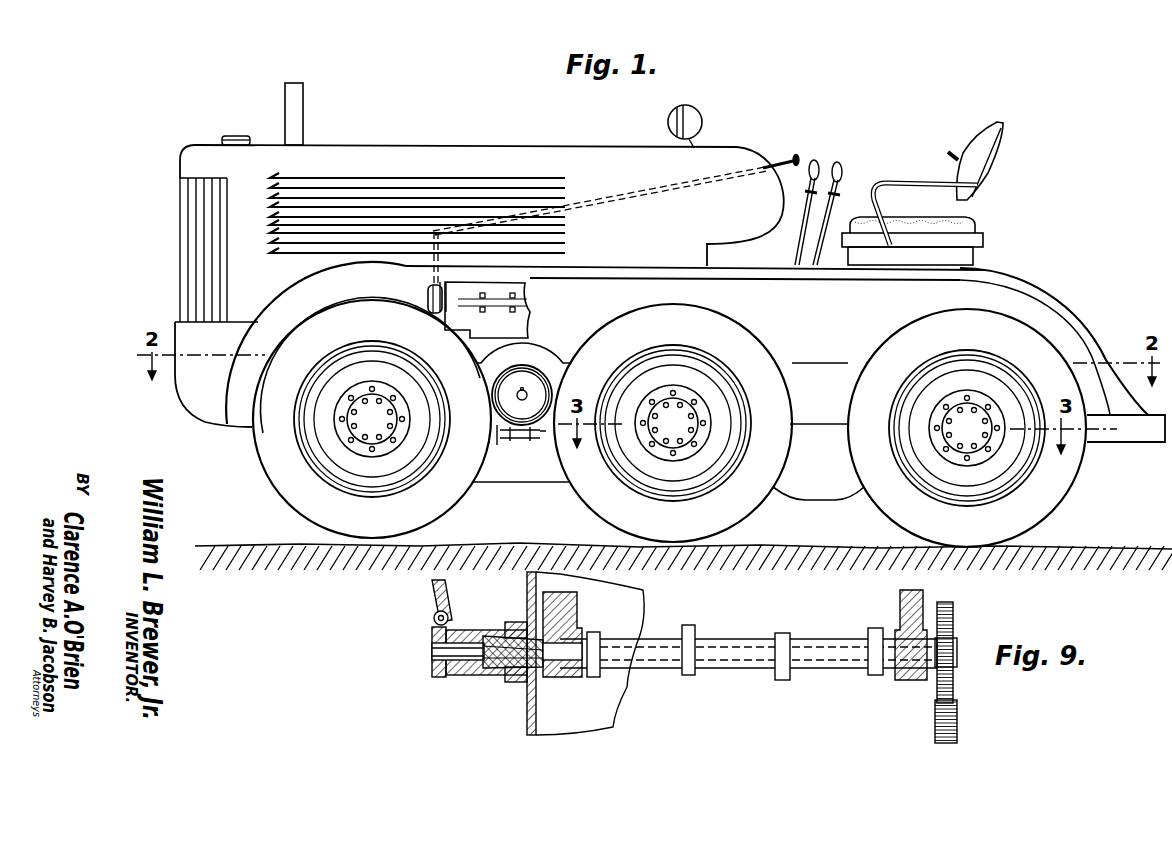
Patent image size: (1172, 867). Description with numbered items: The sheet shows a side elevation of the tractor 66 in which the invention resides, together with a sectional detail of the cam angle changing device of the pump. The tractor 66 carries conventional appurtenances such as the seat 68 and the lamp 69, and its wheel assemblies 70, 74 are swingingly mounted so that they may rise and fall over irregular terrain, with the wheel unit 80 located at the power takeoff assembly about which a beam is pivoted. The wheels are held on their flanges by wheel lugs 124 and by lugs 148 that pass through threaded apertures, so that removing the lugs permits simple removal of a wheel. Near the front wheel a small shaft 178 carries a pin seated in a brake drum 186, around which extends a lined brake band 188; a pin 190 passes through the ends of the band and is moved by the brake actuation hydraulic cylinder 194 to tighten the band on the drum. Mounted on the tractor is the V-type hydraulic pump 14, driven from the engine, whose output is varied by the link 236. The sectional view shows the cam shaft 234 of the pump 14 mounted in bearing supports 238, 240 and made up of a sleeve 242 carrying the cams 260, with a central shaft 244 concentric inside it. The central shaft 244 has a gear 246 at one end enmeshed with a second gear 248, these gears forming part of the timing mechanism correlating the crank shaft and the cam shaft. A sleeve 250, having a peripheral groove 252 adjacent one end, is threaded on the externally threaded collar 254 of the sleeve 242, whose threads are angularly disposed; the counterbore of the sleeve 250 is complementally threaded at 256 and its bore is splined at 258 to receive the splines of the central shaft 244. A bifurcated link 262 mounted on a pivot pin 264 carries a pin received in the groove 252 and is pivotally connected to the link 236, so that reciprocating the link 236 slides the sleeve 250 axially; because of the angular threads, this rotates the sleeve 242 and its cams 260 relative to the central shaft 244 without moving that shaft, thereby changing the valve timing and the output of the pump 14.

In FIG. 1, the tractor 66 is at (450, 128).
In FIG. 1, the seat 68 is at (994, 215).
In FIG. 1, the lamp 69 is at (702, 122).
In FIG. 1, the wheel assembly 70 is at (330, 324).
In FIG. 1, the wheel assembly 74 is at (1052, 336).
In FIG. 1, the wheel unit 80 is at (765, 338).
In FIG. 1, the wheel lugs 124 is at (408, 423).
In FIG. 1, the lugs 148 is at (696, 402).
In FIG. 1, the V-type hydraulic pump 14 is at (507, 335).
In FIG. 9, the V-type hydraulic pump 14 is at (527, 718).
In FIG. 1, the small shaft 178 is at (512, 396).
In FIG. 1, the brake drum 186 is at (530, 378).
In FIG. 1, the brake band 188 is at (554, 383).
In FIG. 1, the pin 190 is at (522, 440).
In FIG. 1, the brake actuation hydraulic cylinder 194 is at (521, 412).
In FIG. 9, the cam shaft 234 is at (720, 670).
In FIG. 1, the link 236 is at (770, 165).
In FIG. 9, the bearing support 238 is at (898, 613).
In FIG. 9, the bearing support 240 is at (577, 613).
In FIG. 9, the sleeve 242 is at (737, 643).
In FIG. 9, the central shaft 244 is at (562, 660).
In FIG. 9, the gear 246 is at (957, 616).
In FIG. 9, the second gear 248 is at (955, 722).
In FIG. 1, the sleeve 250 is at (430, 313).
In FIG. 9, the sleeve 250 is at (470, 677).
In FIG. 9, the groove 252 is at (443, 678).
In FIG. 9, the externally threaded collar 254 is at (518, 625).
In FIG. 9, the threaded counterbore 256 is at (486, 640).
In FIG. 9, the splined bore 258 is at (462, 640).
In FIG. 9, the cams 260 is at (690, 632).
In FIG. 1, the bifurcated link 262 is at (426, 292).
In FIG. 9, the bifurcated link 262 is at (432, 604).
In FIG. 9, the pivot pin 264 is at (436, 625).